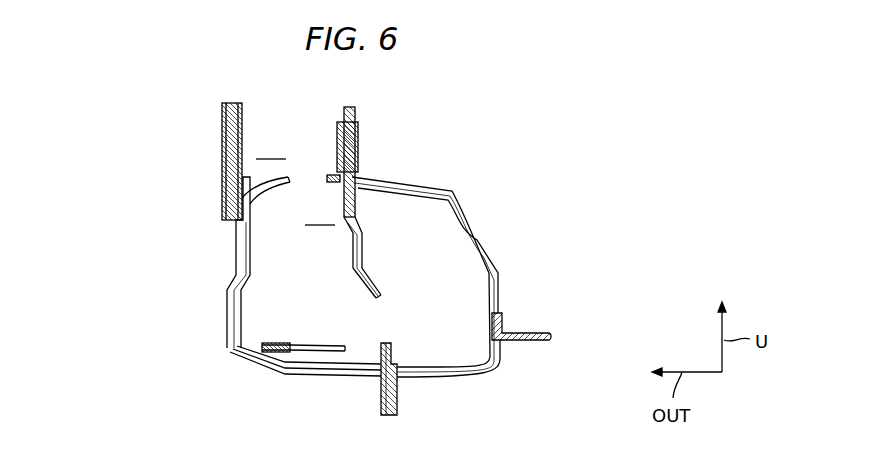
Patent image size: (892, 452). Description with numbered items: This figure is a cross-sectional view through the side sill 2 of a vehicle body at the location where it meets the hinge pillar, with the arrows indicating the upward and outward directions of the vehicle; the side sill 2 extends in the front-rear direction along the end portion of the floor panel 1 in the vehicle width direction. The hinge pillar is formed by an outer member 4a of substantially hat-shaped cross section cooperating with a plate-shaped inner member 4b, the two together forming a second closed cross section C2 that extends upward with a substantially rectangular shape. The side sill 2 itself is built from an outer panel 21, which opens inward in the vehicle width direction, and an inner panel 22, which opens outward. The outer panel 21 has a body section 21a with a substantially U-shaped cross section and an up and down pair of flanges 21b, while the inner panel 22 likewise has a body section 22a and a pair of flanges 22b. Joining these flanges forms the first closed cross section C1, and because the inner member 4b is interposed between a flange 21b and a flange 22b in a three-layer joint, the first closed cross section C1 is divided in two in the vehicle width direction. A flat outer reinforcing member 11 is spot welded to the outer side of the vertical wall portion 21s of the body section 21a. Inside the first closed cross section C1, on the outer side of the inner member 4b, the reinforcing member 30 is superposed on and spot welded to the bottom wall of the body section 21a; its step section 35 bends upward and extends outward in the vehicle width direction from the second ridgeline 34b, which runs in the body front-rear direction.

The floor panel 1 is at (538, 333).
The side sill 2 is at (286, 379).
The outer member 4a is at (223, 146).
The inner member 4b is at (363, 247).
The outer reinforcing member 11 is at (227, 286).
The outer panel 21 is at (232, 349).
The body section 21a is at (240, 358).
The flanges 21b is at (382, 396).
The vertical wall portion 21s is at (248, 246).
The inner panel 22 is at (452, 192).
The body section 22a is at (478, 243).
The flanges 22b is at (356, 135).
The reinforcing member 30 is at (338, 349).
The second ridgeline 34b is at (280, 345).
The step section 35 is at (285, 346).
The first closed cross section C1 is at (320, 214).
The second closed cross section C2 is at (271, 148).